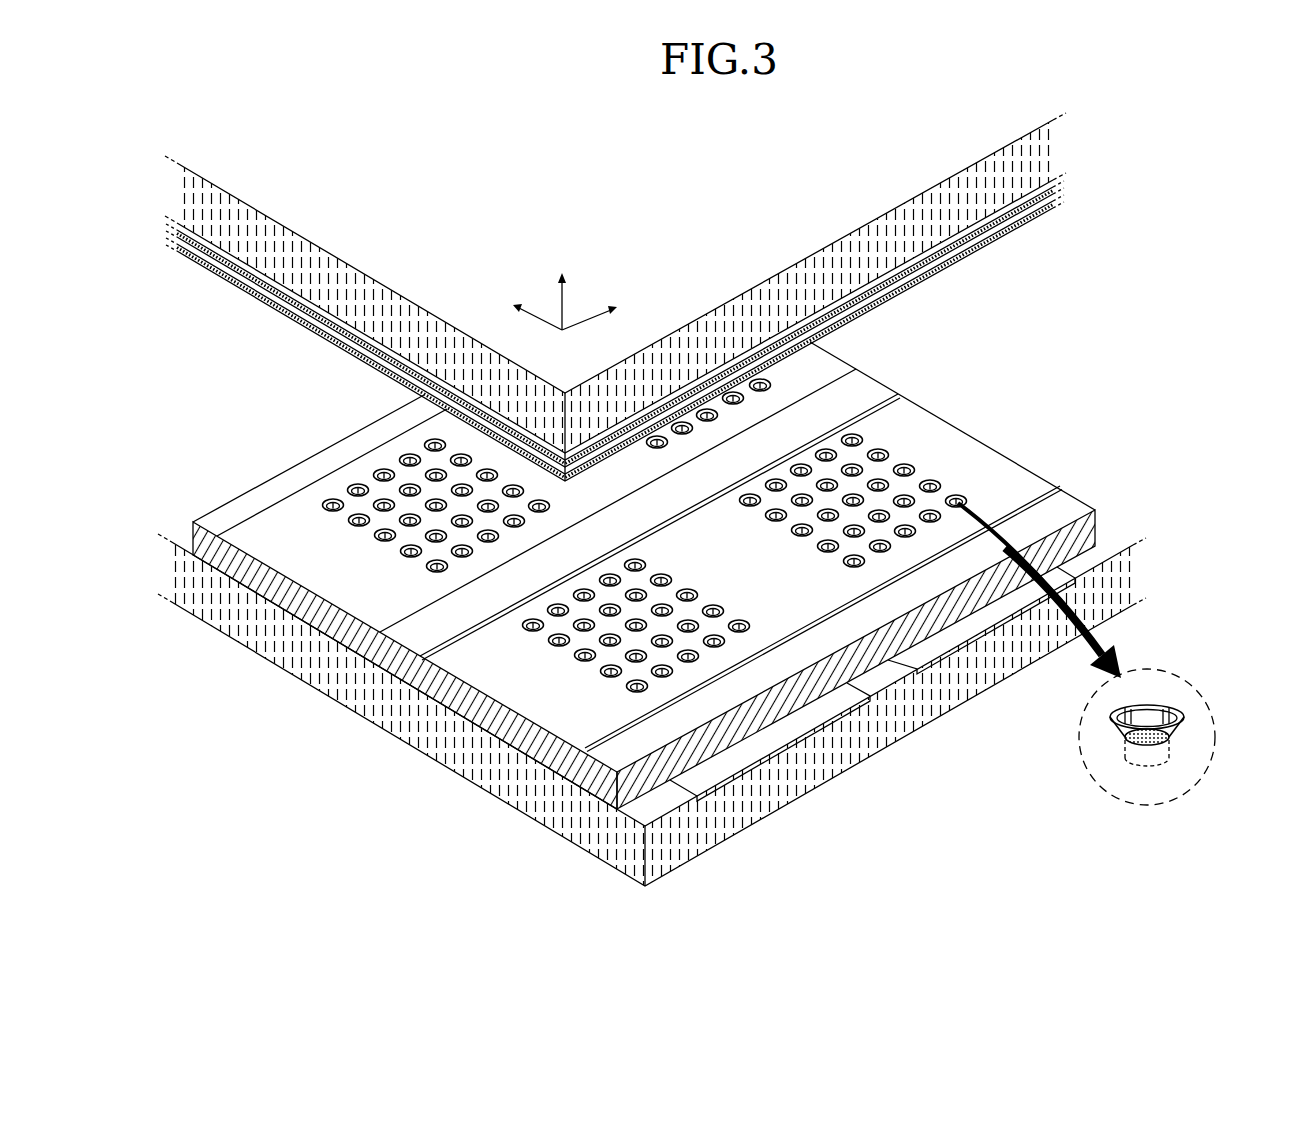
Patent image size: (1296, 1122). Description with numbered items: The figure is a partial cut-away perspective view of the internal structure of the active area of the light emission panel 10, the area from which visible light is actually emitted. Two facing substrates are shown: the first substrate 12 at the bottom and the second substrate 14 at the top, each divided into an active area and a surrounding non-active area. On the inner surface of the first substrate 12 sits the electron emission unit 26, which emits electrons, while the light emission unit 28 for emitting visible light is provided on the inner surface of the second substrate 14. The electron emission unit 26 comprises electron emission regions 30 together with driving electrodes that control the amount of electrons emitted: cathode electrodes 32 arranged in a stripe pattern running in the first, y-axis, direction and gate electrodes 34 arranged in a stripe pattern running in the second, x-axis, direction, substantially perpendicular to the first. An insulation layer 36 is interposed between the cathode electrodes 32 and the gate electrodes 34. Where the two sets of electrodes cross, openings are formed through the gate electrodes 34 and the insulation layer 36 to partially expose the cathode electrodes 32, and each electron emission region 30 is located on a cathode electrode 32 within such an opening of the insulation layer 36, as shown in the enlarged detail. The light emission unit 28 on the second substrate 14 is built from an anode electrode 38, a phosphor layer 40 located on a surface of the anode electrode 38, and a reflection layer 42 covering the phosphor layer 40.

The liquid ejecting head 10 is at (648, 168).
The first substrate 12 is at (560, 818).
The second substrate 14 is at (243, 222).
The electron emission unit 26 is at (670, 575).
The light emission unit 28 is at (615, 297).
The electron emission region 30 is at (1165, 738).
The cathode electrode 32 is at (850, 697).
The gate electrode 34 is at (465, 662).
The insulation layer 36 is at (1083, 535).
The anode electrode 38 is at (903, 267).
The phosphor layer 40 is at (887, 297).
The reflection layer 42 is at (927, 270).